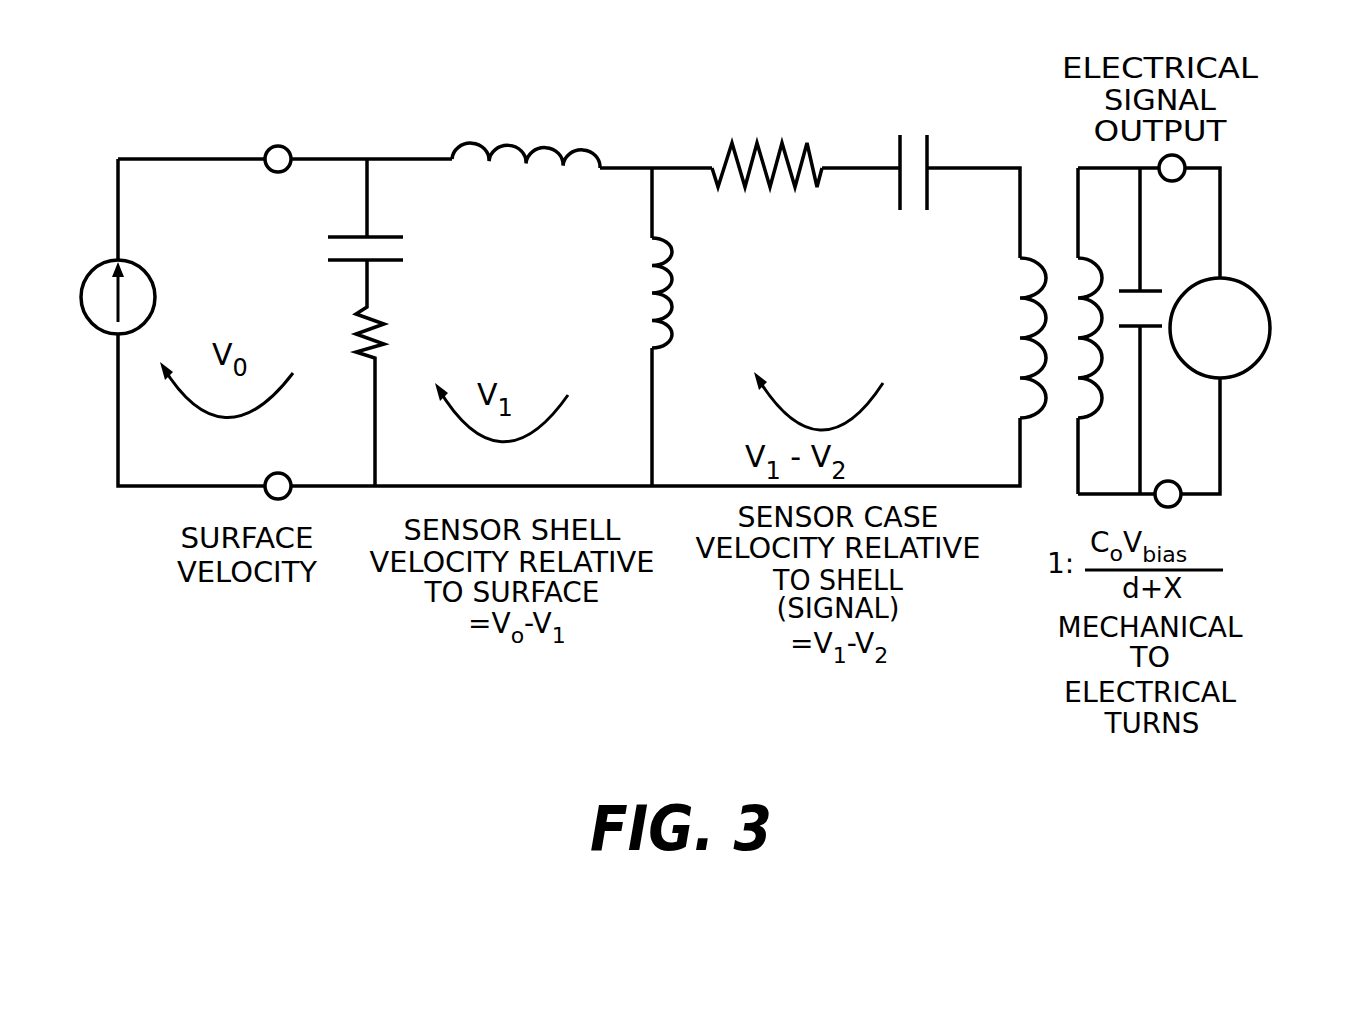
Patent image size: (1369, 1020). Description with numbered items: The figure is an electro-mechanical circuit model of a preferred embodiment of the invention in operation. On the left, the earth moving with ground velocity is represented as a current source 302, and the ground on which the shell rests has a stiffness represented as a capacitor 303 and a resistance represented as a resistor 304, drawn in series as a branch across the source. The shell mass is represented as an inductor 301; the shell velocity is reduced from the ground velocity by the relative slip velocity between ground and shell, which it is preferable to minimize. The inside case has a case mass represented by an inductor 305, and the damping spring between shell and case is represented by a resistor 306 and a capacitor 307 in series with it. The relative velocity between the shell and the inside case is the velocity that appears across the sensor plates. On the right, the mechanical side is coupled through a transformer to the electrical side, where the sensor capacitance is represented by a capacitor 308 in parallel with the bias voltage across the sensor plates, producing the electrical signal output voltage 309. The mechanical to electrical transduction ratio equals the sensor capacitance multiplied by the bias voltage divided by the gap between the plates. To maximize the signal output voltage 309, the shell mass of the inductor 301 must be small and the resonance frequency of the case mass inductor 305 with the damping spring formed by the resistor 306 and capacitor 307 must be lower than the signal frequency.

The inductor 301 is at (452, 146).
The current source 302 is at (97, 264).
The capacitor 303 is at (345, 236).
The resistor 304 is at (370, 358).
The inductor 305 is at (705, 312).
The resistor 306 is at (726, 164).
The capacitor 307 is at (932, 172).
The capacitor 308 is at (1152, 380).
The signal output voltage 309 is at (1259, 372).